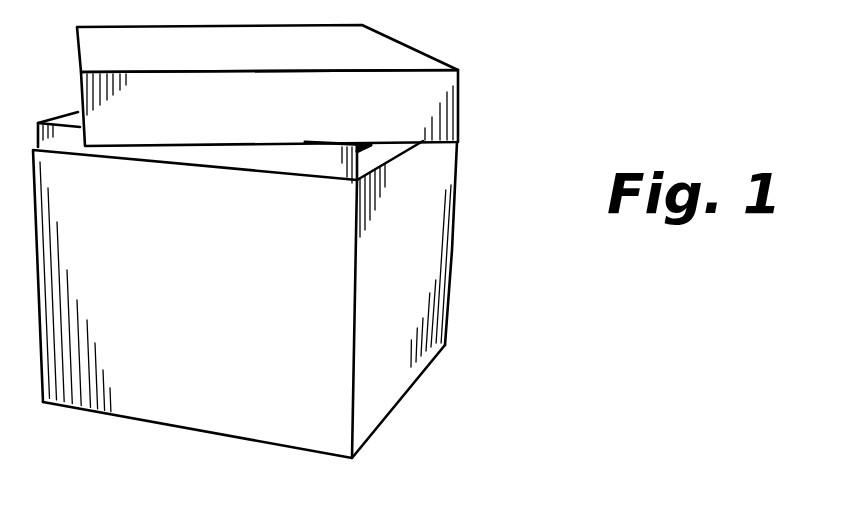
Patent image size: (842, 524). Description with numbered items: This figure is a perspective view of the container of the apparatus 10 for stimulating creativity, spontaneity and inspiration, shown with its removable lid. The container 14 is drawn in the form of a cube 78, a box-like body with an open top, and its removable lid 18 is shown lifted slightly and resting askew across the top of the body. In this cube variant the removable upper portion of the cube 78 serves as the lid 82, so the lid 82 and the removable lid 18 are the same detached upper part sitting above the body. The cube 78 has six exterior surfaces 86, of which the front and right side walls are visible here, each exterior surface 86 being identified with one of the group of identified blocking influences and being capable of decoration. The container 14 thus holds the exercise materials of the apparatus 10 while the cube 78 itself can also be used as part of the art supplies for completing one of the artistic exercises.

The apparatus 10 is at (596, 120).
The container 14 is at (440, 330).
The removable lid 18 is at (435, 112).
The cube 78 is at (408, 378).
The lid 82 is at (427, 80).
The exterior surfaces 86 is at (244, 485).